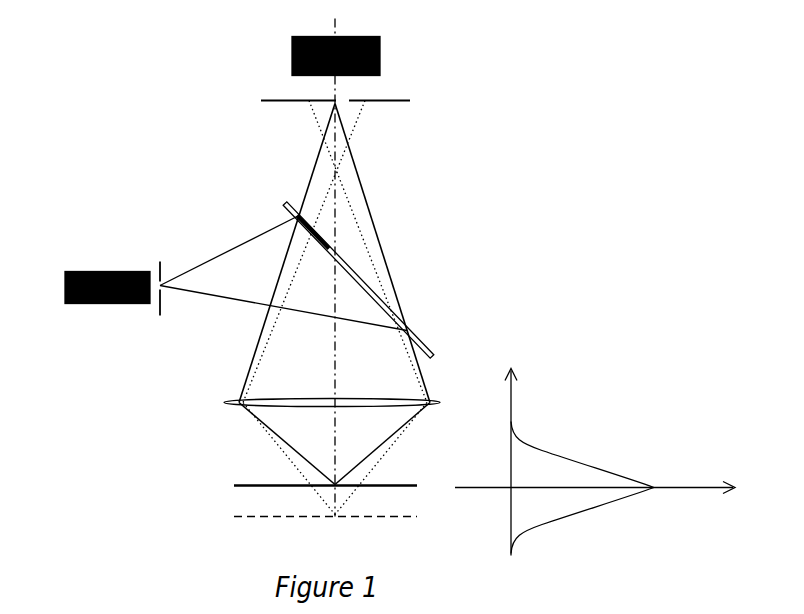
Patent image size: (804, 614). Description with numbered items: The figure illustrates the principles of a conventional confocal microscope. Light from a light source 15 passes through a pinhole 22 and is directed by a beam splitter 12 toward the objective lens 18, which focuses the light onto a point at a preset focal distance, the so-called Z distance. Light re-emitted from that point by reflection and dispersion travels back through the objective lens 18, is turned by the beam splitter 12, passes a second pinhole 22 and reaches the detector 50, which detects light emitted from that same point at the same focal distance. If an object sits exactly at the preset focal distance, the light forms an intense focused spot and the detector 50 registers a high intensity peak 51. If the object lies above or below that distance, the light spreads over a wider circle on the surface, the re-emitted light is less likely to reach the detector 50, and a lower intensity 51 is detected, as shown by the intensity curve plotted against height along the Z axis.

The detector 50 is at (387, 61).
The pinhole 22 is at (348, 100).
The light source 15 is at (218, 274).
The beam splitter 12 is at (423, 337).
The objective lens 18 is at (277, 407).
The intensity peak 51 is at (612, 451).